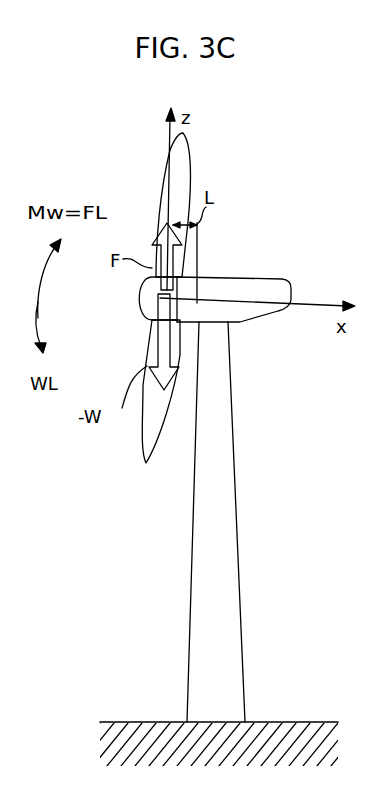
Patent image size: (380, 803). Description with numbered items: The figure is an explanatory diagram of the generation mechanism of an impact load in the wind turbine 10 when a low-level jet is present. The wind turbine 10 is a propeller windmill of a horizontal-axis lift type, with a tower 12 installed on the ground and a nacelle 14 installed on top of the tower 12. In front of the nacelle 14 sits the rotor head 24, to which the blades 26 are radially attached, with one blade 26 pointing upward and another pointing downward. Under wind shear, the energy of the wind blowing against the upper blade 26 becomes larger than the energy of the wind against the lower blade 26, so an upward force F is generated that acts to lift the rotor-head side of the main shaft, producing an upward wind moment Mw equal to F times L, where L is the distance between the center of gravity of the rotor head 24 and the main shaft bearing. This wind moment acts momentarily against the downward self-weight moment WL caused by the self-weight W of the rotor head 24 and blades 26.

The wind turbine for wind power generation 10 is at (288, 226).
The tower 12 is at (237, 527).
The nacelle 14 is at (263, 320).
The rotor head 24 is at (137, 288).
The blade 26 is at (190, 138).